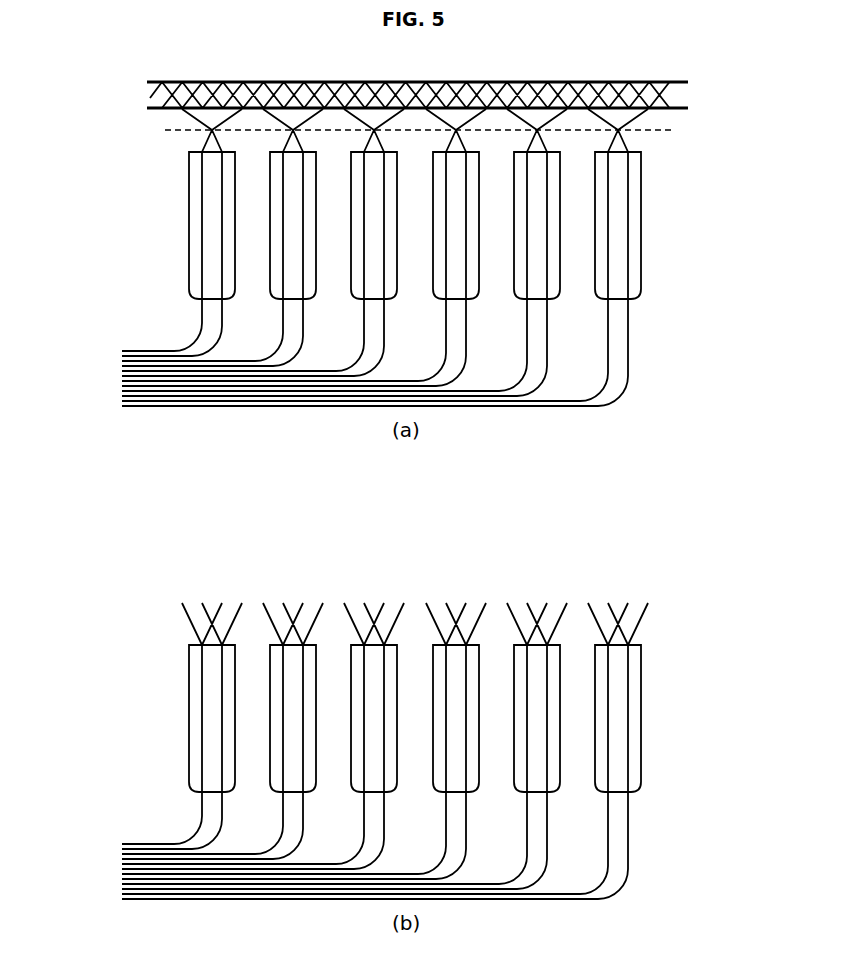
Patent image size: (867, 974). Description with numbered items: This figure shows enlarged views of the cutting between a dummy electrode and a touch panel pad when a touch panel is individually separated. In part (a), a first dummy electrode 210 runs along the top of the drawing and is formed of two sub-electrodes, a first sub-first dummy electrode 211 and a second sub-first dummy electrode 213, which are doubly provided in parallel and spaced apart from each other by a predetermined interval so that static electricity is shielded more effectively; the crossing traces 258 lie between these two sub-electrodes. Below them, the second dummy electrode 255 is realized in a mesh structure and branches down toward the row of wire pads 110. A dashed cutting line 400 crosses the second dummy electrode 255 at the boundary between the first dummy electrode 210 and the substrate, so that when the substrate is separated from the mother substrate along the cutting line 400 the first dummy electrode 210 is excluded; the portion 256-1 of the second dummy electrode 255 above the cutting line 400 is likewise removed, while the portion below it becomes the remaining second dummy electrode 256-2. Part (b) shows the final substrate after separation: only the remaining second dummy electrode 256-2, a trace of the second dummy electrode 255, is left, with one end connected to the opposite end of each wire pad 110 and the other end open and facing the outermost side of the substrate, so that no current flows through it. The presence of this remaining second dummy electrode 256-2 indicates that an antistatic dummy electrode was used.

The wire pad 110 is at (641, 220).
The first dummy electrode 210 is at (473, 93).
The first sub-first dummy electrode 211 is at (688, 108).
The second sub-first dummy electrode 213 is at (688, 82).
The second dummy electrode 255 is at (387, 363).
The first fiber portion 256-1 is at (183, 118).
The remaining second dummy electrode 256-2 is at (193, 139).
The woven fiber portion 258 is at (167, 90).
The cutting line 400 is at (672, 130).